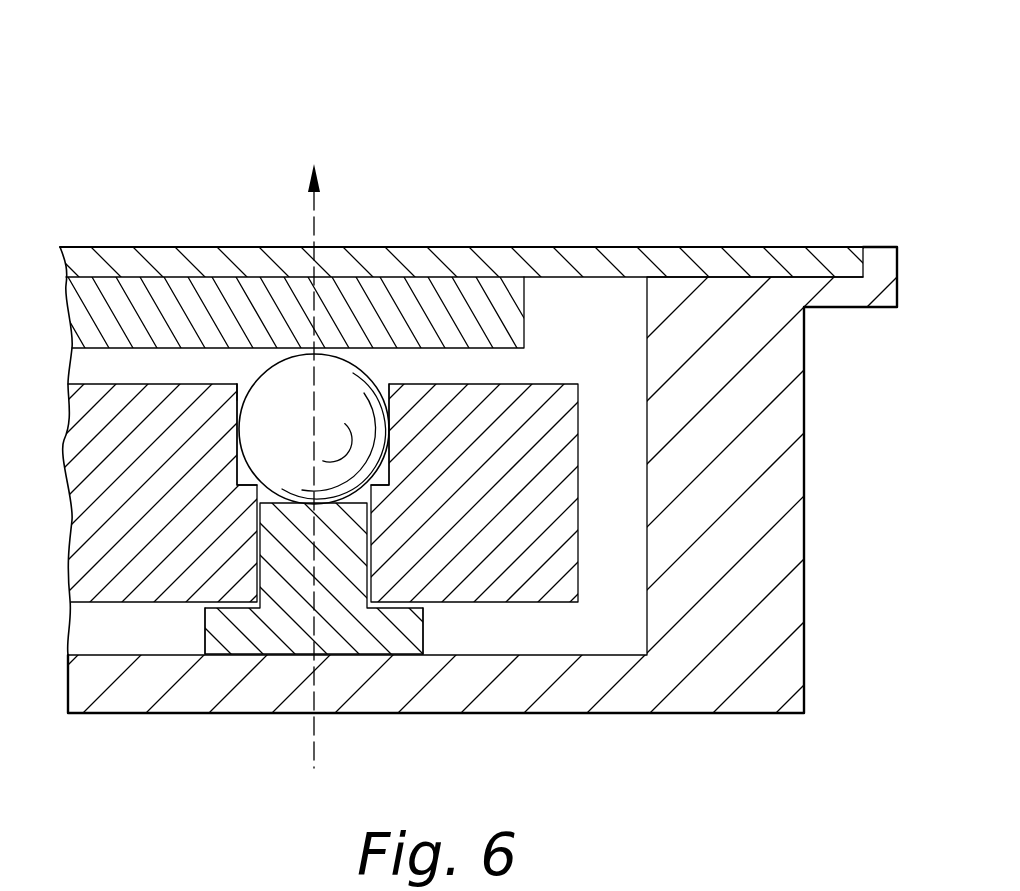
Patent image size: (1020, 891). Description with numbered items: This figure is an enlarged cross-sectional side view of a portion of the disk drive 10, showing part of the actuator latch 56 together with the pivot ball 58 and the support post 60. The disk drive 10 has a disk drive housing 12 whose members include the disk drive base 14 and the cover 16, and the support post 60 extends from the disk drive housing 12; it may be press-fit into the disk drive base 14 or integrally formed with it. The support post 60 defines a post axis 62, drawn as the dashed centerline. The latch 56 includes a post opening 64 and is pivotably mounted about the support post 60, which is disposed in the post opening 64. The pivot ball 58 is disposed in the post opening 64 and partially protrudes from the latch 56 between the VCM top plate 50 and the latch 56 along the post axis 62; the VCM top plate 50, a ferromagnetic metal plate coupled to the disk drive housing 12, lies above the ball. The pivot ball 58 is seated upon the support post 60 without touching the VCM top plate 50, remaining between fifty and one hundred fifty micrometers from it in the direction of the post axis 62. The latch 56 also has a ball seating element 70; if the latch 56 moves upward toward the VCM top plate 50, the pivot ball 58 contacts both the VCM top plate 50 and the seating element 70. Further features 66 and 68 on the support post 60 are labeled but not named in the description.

The disk drive 10 is at (177, 82).
The disk drive housing 12 is at (638, 175).
The disk drive base 14 is at (760, 307).
The cover 16 is at (697, 253).
The VCM top plate 50 is at (64, 298).
The actuator latch 56 is at (63, 460).
The pivot ball 58 is at (348, 395).
The support post 60 is at (203, 636).
The post axis 62 is at (312, 222).
The post opening 64 is at (247, 382).
The support stem 66 is at (270, 546).
The flange edge 68 is at (422, 622).
The ball seating element 70 is at (243, 483).